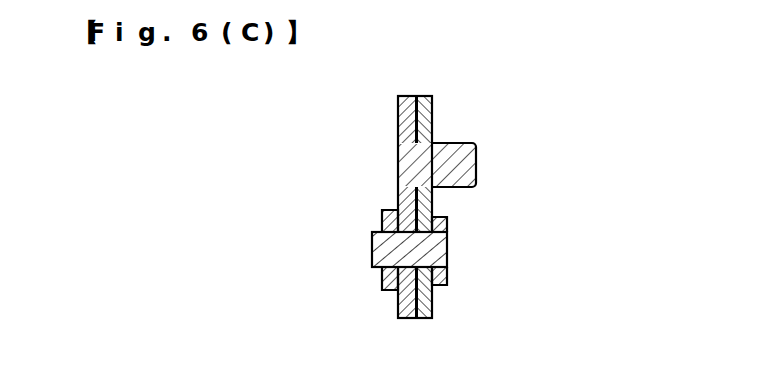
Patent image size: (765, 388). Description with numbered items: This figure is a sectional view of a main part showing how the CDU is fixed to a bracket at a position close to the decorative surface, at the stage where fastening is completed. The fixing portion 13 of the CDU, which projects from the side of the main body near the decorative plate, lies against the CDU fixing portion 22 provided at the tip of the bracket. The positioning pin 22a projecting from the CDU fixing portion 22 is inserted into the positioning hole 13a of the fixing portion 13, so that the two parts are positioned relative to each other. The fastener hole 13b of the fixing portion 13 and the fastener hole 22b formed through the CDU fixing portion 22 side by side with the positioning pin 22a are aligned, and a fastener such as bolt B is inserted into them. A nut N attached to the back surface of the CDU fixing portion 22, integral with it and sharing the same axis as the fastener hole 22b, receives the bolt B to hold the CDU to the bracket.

The fixing portion 13 is at (432, 110).
The positioning hole 13a is at (432, 143).
The fastener hole 13b is at (432, 297).
The CDU fixing portion 22 is at (398, 117).
The positioning pin 22a is at (477, 168).
The fastener hole 22b is at (399, 290).
The nut N is at (382, 220).
The bolt B is at (447, 243).